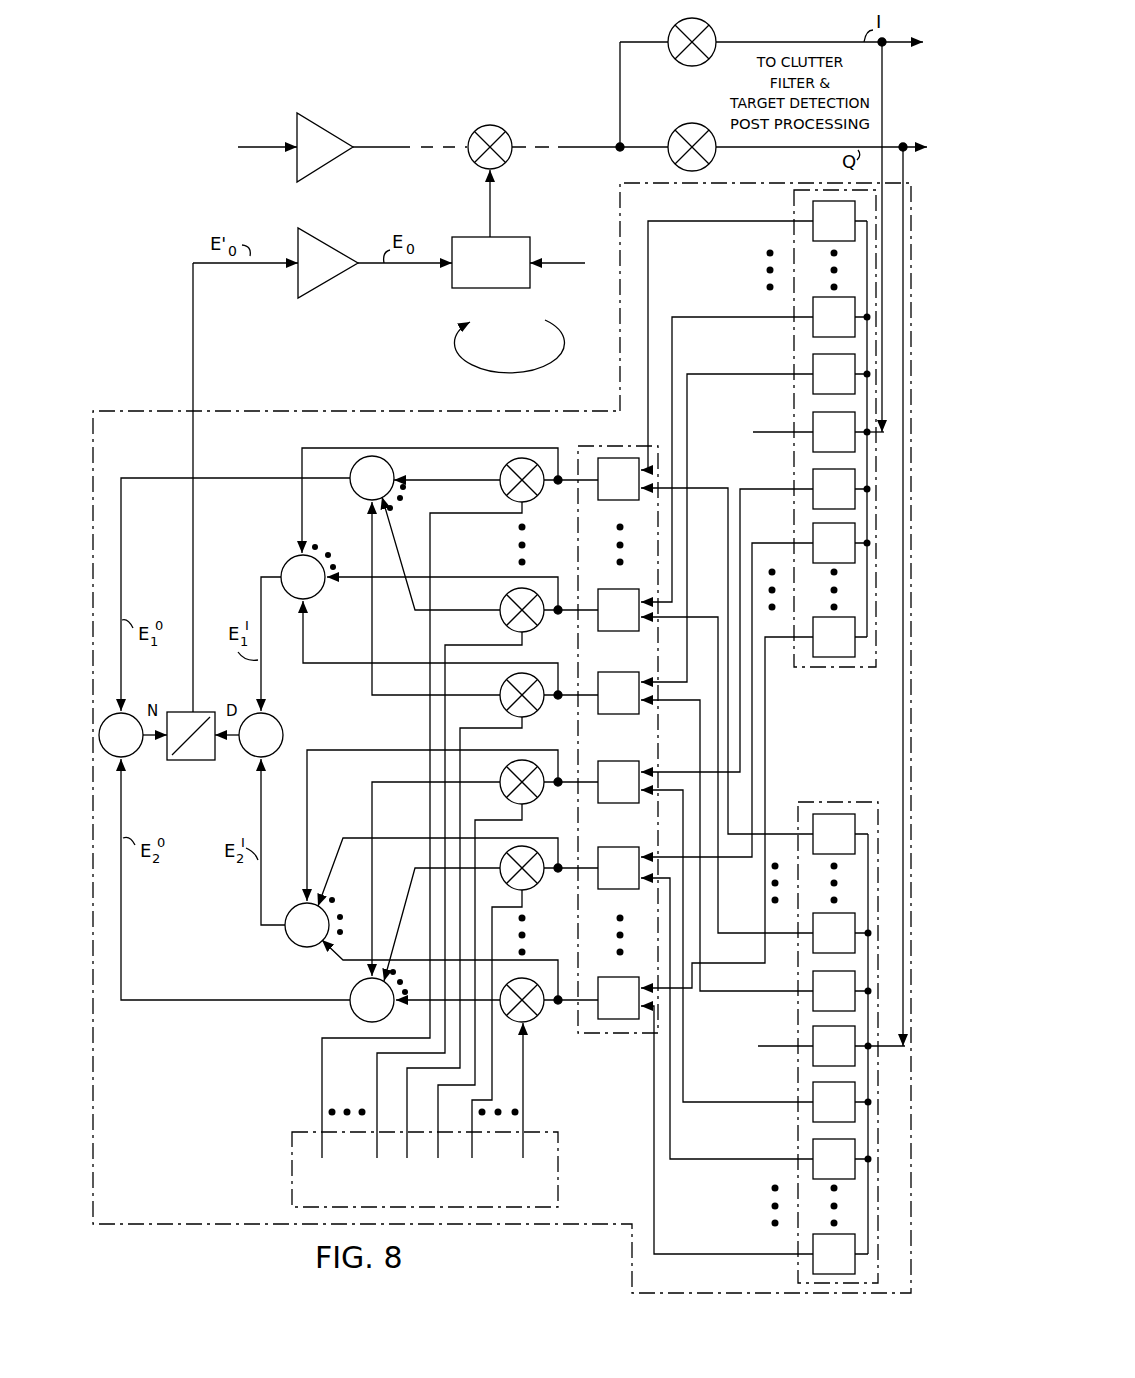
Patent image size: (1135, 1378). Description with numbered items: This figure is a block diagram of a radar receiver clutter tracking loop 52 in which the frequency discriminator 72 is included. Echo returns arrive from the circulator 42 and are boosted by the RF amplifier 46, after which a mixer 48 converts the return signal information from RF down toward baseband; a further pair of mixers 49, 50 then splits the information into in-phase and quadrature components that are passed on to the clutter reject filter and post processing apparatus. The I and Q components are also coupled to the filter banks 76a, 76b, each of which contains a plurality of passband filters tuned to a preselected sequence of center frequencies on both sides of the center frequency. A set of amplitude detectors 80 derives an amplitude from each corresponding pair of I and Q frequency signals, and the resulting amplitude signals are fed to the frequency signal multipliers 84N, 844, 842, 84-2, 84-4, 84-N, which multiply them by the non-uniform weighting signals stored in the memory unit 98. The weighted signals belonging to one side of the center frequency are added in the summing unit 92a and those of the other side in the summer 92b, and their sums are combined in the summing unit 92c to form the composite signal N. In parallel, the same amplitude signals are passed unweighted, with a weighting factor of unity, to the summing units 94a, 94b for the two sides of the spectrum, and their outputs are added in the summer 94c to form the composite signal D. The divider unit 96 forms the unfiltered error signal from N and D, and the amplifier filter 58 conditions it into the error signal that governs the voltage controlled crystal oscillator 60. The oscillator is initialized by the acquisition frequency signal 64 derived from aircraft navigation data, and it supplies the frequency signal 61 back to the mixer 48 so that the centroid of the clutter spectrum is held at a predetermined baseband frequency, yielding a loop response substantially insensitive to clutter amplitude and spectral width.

The circulator 42 is at (216, 147).
The RF amplifier 46 is at (322, 116).
The mixer 48 is at (498, 126).
The mixer 49 is at (709, 28).
The mixer 50 is at (690, 122).
The clutter tracking loop 52 is at (535, 356).
The amplifier filter 58 is at (332, 287).
The voltage controlled crystal oscillator 60 is at (505, 237).
The frequency signal 61 is at (488, 200).
The initial or acquisition frequency signal 64 is at (556, 263).
The frequency discriminator 72 is at (243, 1124).
The filter bank 76a is at (803, 667).
The filter bank 76b is at (800, 802).
The set of amplitude detectors 80 is at (612, 1033).
The frequency signal multiplier 84N is at (536, 499).
The frequency signal multiplier 844 is at (536, 629).
The frequency signal multiplier 842 is at (536, 714).
The frequency signal multiplier 84-2 is at (536, 801).
The frequency signal multiplier 84-4 is at (536, 887).
The frequency signal multiplier 84-N is at (536, 1019).
The summing unit 92a is at (354, 492).
The summing unit 92b is at (353, 1012).
The summing unit 92c is at (136, 753).
The summing unit 94a is at (314, 597).
The summing unit 94b is at (296, 945).
The summing unit 94c is at (278, 720).
The divider unit 96 is at (195, 760).
The memory unit 98 is at (558, 1140).